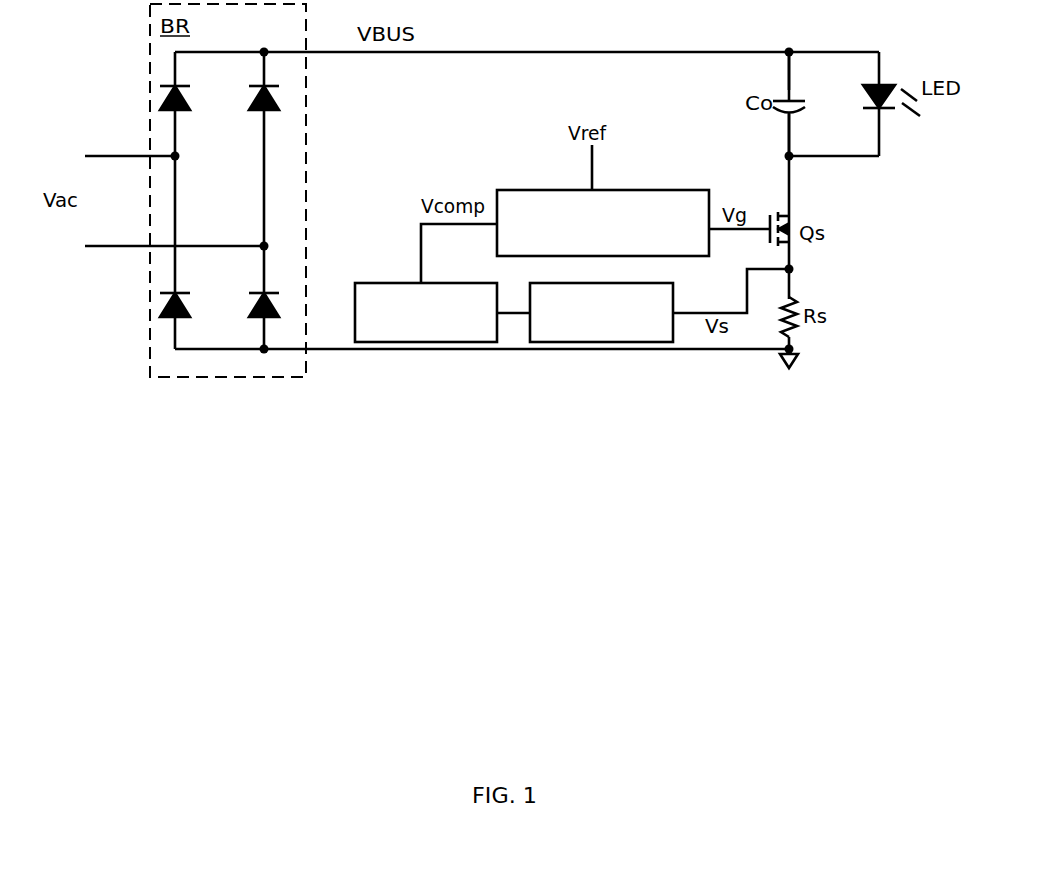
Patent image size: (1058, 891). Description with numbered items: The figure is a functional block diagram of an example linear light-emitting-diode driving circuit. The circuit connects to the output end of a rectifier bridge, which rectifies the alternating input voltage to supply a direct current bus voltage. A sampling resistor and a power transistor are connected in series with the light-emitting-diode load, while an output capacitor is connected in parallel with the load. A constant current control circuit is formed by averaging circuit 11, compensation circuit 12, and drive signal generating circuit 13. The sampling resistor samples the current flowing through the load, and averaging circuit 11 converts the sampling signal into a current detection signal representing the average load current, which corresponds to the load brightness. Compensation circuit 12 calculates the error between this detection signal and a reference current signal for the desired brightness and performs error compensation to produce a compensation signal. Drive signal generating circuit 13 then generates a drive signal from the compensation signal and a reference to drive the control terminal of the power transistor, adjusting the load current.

The averaging circuit 11 is at (644, 335).
The compensation circuit 12 is at (469, 335).
The drive signal generating circuit 13 is at (696, 246).